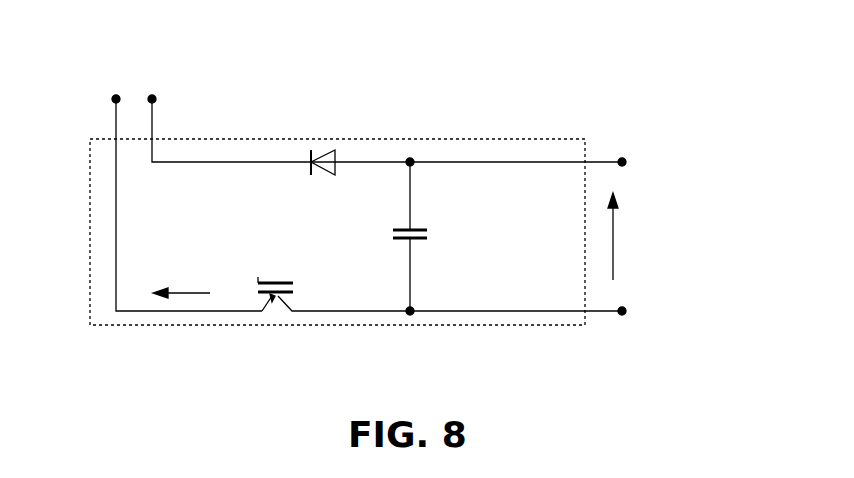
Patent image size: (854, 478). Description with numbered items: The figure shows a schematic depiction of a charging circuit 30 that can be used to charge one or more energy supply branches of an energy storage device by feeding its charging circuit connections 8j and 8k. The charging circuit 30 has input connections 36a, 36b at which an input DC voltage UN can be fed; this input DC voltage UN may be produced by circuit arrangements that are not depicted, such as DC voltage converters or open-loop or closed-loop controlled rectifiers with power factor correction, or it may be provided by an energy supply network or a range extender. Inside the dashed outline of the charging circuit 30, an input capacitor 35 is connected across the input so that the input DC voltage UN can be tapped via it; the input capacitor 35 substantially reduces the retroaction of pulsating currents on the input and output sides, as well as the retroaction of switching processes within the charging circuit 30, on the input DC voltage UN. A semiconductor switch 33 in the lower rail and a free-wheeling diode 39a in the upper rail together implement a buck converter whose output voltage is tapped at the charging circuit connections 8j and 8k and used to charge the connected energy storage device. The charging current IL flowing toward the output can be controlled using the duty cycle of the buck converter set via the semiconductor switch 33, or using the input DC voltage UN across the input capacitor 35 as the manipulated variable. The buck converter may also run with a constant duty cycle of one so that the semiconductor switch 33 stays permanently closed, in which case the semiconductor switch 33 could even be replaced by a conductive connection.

The charging circuit 30 is at (290, 139).
The charging circuit connection 8j is at (116, 99).
The charging circuit connection 8k is at (152, 99).
The free-wheeling diode 39a is at (323, 176).
The input capacitor 35 is at (428, 237).
The semiconductor switch 33 is at (274, 300).
The input connection 36b is at (626, 162).
The input connection 36a is at (626, 311).
The input DC voltage UN is at (614, 243).
The charging current IL is at (190, 293).